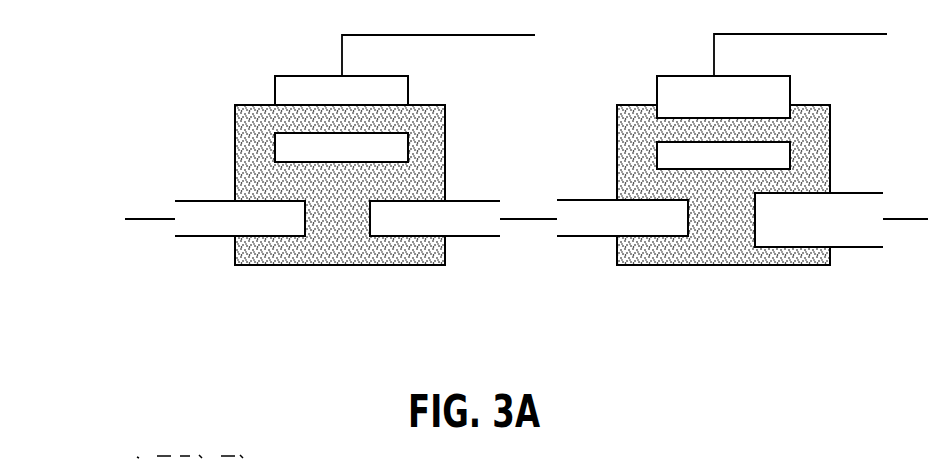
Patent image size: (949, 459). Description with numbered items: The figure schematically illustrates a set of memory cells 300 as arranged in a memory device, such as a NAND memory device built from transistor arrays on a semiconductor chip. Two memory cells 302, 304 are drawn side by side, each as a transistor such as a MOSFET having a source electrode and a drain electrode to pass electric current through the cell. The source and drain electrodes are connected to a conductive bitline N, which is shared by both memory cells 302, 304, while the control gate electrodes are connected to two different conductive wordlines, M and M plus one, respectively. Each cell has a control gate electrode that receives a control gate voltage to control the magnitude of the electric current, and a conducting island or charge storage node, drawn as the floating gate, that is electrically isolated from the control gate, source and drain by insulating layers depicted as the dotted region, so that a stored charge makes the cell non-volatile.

The memory cell array structure 300 is at (212, 74).
The memory cell 302 is at (337, 210).
The memory cell 304 is at (720, 210).